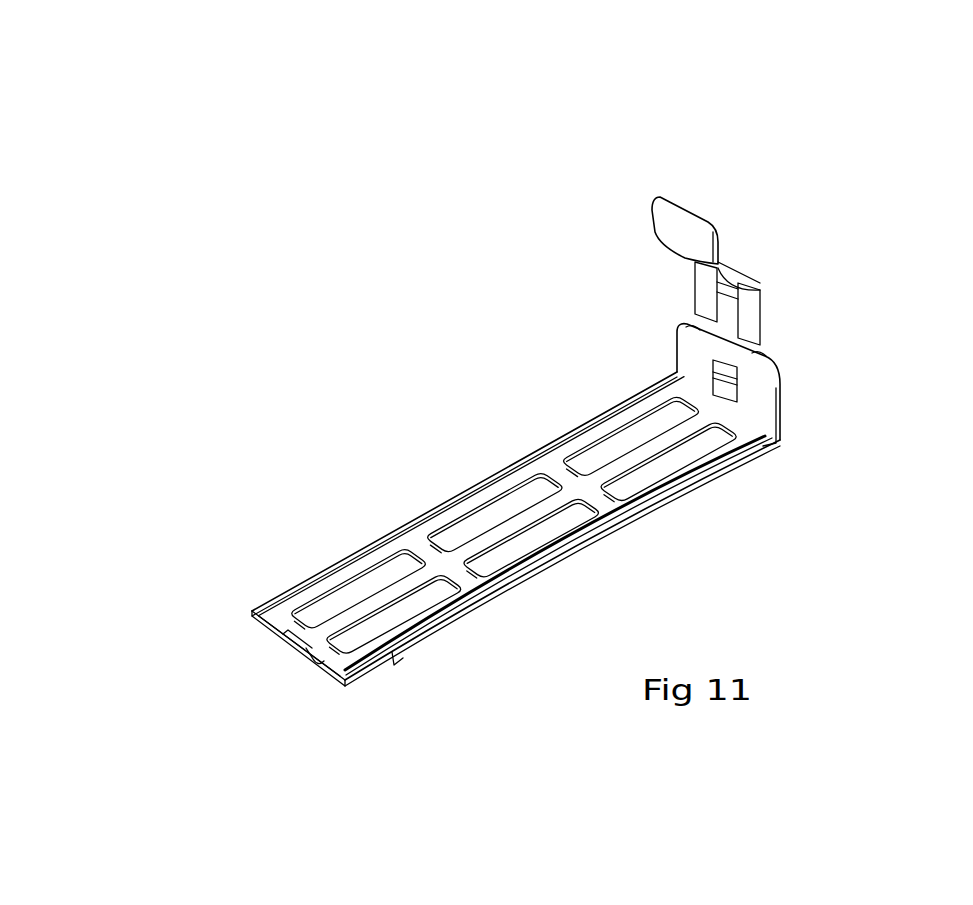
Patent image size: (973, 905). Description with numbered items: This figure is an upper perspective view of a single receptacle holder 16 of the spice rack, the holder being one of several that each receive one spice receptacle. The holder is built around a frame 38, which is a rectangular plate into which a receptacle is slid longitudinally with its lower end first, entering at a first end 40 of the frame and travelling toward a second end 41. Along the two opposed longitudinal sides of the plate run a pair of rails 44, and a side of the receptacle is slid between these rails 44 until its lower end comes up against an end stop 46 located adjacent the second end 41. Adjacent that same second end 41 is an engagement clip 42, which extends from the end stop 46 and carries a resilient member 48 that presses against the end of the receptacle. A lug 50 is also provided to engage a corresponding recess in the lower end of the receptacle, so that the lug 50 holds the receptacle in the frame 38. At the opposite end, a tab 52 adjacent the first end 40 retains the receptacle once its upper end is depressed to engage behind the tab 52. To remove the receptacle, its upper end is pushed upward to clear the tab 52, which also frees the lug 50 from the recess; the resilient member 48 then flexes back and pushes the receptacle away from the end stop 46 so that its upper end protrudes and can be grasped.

The receptacle holder 16 is at (407, 368).
The frame 38 is at (703, 475).
The first end 40 is at (338, 693).
The second end 41 is at (782, 418).
The engagement clip 42 is at (755, 315).
The rails 44 is at (337, 558).
The end stop 46 is at (780, 392).
The resilient member 48 is at (675, 238).
The lug 50 is at (705, 298).
The tab 52 is at (283, 653).